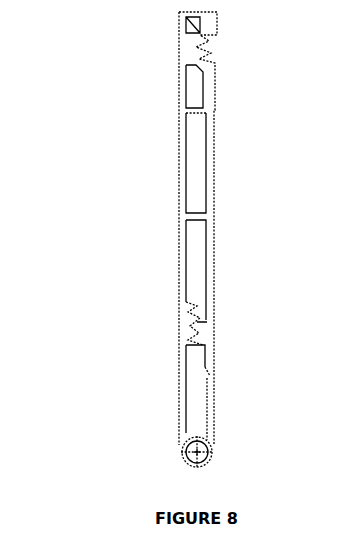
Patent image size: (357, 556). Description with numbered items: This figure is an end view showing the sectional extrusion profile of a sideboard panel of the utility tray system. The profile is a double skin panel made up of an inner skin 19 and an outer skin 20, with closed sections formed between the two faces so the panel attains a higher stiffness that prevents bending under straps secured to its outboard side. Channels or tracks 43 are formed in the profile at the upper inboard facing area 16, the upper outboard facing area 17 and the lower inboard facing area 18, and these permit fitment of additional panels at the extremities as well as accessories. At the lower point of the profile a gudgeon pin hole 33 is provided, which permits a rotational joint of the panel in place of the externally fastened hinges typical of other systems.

The upper inboard facing area 16 is at (202, 62).
The upper outboard facing area 17 is at (193, 38).
The lower inboard facing area 18 is at (188, 322).
The inner skin 19 is at (214, 245).
The outer skin 20 is at (179, 245).
The gudgeon pin hole 33 is at (213, 445).
The channels or tracks 43 is at (176, 322).